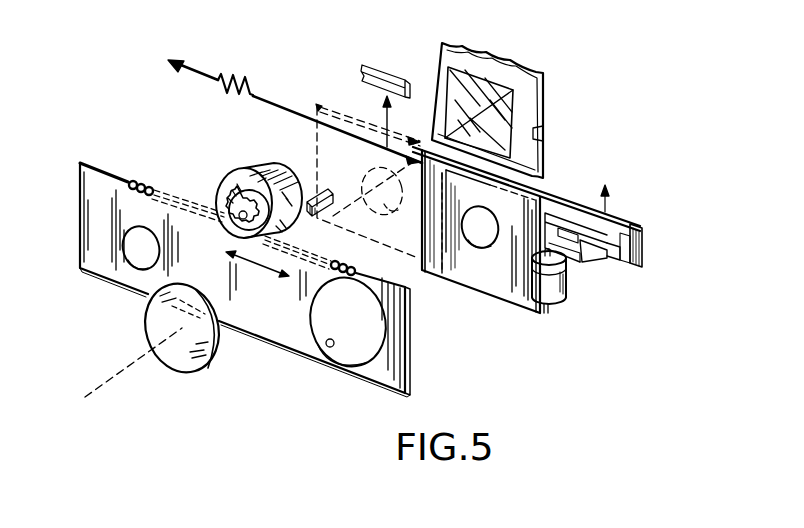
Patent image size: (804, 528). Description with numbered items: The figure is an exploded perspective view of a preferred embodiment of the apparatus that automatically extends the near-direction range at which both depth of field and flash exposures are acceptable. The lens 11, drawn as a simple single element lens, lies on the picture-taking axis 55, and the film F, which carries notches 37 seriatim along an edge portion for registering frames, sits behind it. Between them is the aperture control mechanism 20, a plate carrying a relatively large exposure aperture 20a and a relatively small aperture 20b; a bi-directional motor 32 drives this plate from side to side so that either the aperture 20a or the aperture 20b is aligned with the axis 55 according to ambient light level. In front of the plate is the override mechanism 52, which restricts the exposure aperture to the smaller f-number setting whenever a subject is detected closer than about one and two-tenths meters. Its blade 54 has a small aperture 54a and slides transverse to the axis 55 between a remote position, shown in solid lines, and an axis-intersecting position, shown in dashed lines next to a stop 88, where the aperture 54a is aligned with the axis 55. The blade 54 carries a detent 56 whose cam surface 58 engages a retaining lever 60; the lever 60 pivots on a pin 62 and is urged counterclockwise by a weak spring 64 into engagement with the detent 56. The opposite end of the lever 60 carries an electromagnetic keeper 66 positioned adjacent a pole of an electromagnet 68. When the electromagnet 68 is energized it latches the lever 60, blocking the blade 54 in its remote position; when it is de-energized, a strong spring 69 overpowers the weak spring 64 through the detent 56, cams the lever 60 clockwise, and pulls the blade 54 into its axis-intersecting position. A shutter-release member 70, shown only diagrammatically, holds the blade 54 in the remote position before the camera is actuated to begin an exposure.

The lens 11 is at (214, 352).
The aperture control mechanism 20 is at (415, 329).
The f/2.8 exposure aperture 20a is at (330, 345).
The f/6 aperture 20b is at (130, 270).
The bi-directional motor 32 is at (230, 176).
The notches 37 is at (548, 133).
The override mechanism 52 is at (630, 302).
The blade 54 is at (340, 108).
The f/6 aperture 54a is at (398, 212).
The picture-taking axis 55 is at (133, 366).
The detent 56 is at (652, 268).
The cam surface 58 is at (641, 225).
The retaining lever 60 is at (582, 258).
The pin 62 is at (573, 224).
The weak spring 64 is at (610, 207).
The electromagnetic keeper 66 is at (562, 283).
The electromagnet 68 is at (551, 292).
The strong spring 69 is at (227, 80).
The shutter-release member 70 is at (403, 66).
The stop 88 is at (318, 188).
The film F is at (536, 88).